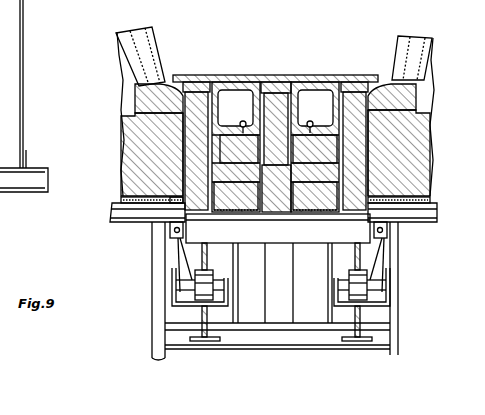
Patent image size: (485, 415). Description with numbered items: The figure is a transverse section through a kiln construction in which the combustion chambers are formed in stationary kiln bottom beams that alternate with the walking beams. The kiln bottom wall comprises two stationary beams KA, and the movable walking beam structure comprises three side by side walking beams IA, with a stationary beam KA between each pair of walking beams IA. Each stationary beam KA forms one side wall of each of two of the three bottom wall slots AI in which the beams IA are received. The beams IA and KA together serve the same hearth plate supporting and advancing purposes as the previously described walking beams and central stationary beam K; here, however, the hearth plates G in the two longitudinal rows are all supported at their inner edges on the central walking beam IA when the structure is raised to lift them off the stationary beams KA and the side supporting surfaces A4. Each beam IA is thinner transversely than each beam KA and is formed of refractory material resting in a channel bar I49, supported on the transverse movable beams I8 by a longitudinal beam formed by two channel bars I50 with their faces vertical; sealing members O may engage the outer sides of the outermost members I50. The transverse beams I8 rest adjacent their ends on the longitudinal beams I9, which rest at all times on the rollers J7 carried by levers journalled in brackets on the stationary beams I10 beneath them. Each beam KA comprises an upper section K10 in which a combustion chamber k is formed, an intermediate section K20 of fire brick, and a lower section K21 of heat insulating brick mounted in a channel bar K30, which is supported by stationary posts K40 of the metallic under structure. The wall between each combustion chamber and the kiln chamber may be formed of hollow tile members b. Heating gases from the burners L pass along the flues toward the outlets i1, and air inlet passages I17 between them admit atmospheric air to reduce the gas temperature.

The hollow tile member b is at (155, 47).
The ledge A4 is at (137, 97).
The air inlet passage I17 is at (125, 118).
The bottom wall slot AI is at (183, 152).
The hearth plate G is at (230, 76).
The burner L is at (208, 85).
The stationary beam KA is at (222, 88).
The stationary beam K is at (275, 108).
The upper section K10 is at (243, 120).
The walking beam IA is at (278, 90).
The intermediate section K20 is at (279, 149).
The lower section K21 is at (275, 195).
The outlet i1 is at (125, 178).
The sealing member O is at (168, 204).
The channel bar I50 is at (207, 212).
The channel bar I49 is at (243, 186).
The longitudinal beam I9 is at (203, 254).
The transverse I-beam I8 is at (228, 240).
The channel bar K30 is at (268, 260).
The stationary post K40 is at (300, 298).
The roller J7 is at (214, 276).
The stationary beam I10 is at (221, 343).